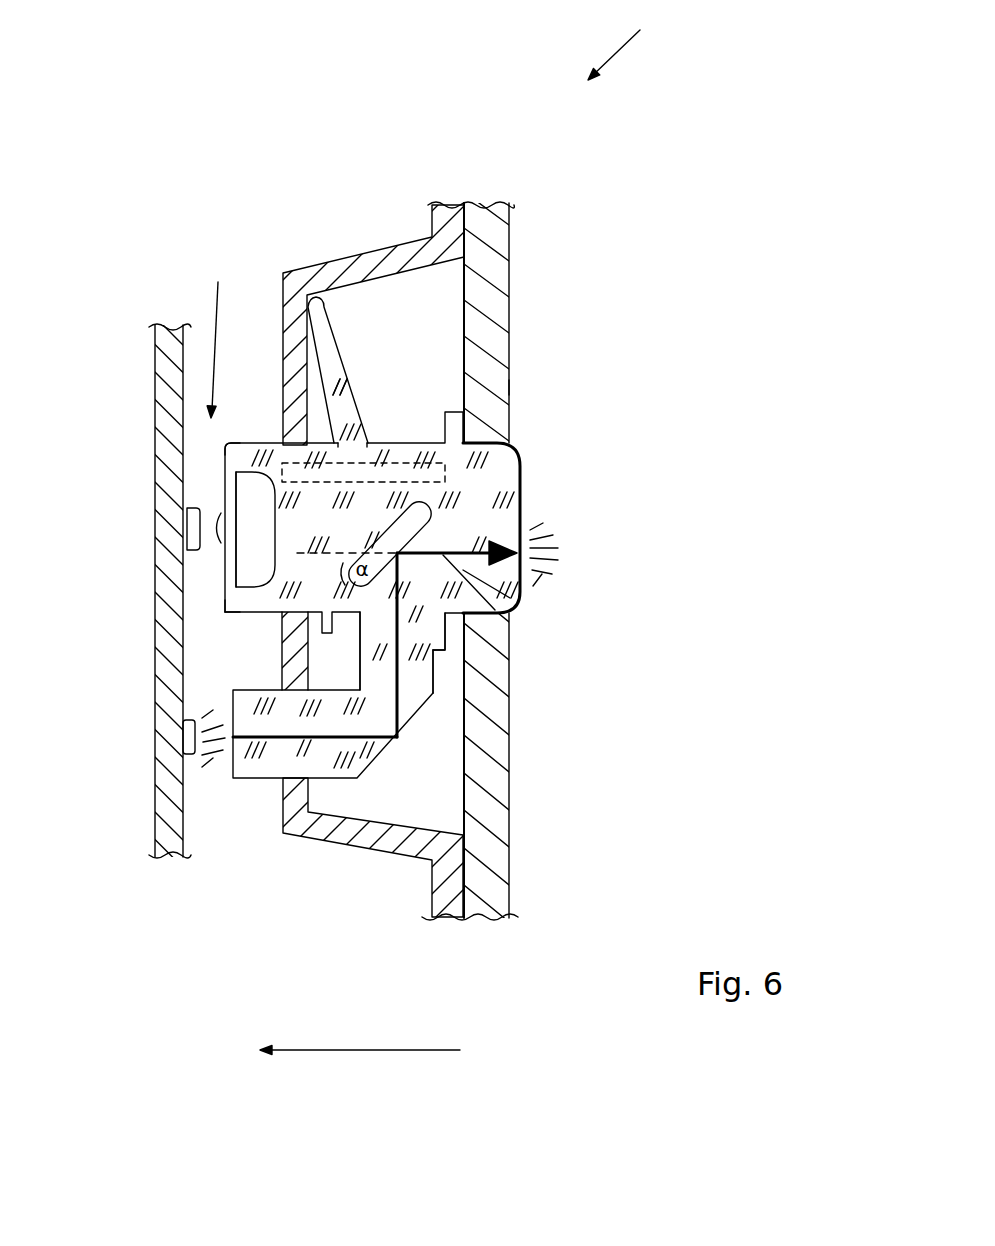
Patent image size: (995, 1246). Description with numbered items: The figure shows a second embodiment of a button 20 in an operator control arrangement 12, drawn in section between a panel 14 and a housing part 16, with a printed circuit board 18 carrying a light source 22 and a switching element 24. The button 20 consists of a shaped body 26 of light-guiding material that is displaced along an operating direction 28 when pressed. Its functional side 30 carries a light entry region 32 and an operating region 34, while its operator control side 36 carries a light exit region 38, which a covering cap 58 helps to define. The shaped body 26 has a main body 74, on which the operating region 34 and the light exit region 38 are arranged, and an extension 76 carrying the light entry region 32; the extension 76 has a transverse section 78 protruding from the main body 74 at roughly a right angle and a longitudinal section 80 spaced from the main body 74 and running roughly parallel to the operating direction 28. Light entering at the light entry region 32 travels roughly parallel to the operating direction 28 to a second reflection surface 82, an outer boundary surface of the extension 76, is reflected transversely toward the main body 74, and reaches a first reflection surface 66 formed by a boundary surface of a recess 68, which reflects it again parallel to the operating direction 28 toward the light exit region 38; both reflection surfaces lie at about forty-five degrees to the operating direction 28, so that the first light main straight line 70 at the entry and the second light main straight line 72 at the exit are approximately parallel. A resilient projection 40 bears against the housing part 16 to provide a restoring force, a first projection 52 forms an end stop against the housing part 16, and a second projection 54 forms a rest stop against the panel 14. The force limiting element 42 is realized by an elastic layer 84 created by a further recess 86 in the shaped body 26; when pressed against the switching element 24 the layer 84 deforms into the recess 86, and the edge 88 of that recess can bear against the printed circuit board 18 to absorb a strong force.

The operator control arrangement 12 is at (625, 43).
The panel 14 is at (505, 260).
The housing part 16 is at (385, 258).
The printed circuit board 18 is at (163, 375).
The button 20 is at (416, 804).
The light source 22 is at (183, 735).
The switching element 24 is at (188, 527).
The shaped body 26 is at (447, 665).
The operating direction 28 is at (372, 1051).
The functional side 30 is at (215, 337).
The light entry region 32 is at (223, 774).
The operating region 34 is at (193, 604).
The operator control side 36 is at (556, 382).
The light exit region 38 is at (575, 536).
The resilient projection 40 is at (337, 360).
The force limiting element 42 is at (205, 575).
The first projection 52 is at (335, 628).
The second projection 54 is at (455, 640).
The covering cap 58 is at (432, 505).
The first reflection surface 66 is at (522, 522).
The recess 68 is at (368, 445).
The first light main straight line 70 is at (297, 755).
The second light main straight line 72 is at (511, 620).
The main body 74 is at (522, 597).
The extension 76 is at (403, 710).
The transverse section 78 is at (413, 672).
The longitudinal section 80 is at (287, 754).
The second reflection surface 82 is at (404, 712).
The elastic layer 84 is at (257, 513).
The further recess 86 is at (238, 490).
The edge 88 is at (222, 446).